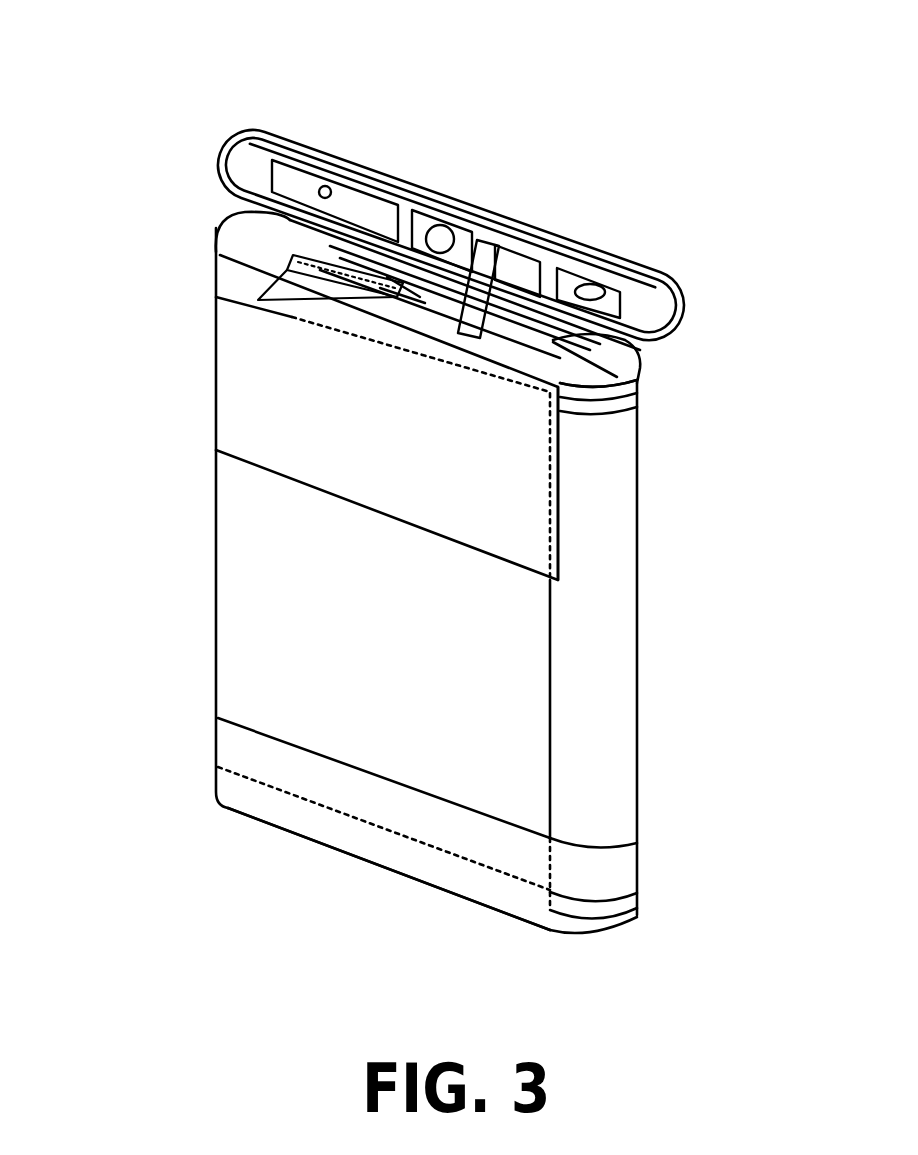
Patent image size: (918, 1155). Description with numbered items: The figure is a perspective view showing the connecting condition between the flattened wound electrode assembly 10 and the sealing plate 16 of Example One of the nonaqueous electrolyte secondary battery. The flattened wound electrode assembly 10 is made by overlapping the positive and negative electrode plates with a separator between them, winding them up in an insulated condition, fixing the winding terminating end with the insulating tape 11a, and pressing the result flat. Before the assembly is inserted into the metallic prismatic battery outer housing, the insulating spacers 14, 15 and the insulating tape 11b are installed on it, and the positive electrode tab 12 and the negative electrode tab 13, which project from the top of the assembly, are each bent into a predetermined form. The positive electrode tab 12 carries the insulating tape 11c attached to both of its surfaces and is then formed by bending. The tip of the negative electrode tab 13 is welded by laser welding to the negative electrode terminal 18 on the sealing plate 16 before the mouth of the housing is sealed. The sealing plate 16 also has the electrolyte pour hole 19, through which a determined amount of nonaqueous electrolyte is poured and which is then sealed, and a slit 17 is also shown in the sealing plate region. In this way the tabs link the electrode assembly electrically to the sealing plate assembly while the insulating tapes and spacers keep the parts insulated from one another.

The flattened wound electrode assembly 10 is at (285, 662).
The insulating tape 11a is at (613, 767).
The insulating tape 11b is at (265, 405).
The insulating tape 11c is at (262, 178).
The positive electrode tab 12 is at (266, 297).
The negative electrode tab 13 is at (492, 248).
The insulating spacer 14 is at (235, 238).
The insulating spacer 15 is at (247, 806).
The sealing plate 16 is at (633, 307).
The slit 17 is at (605, 388).
The negative electrode terminal 18 is at (447, 228).
The electrolyte pour hole 19 is at (327, 186).